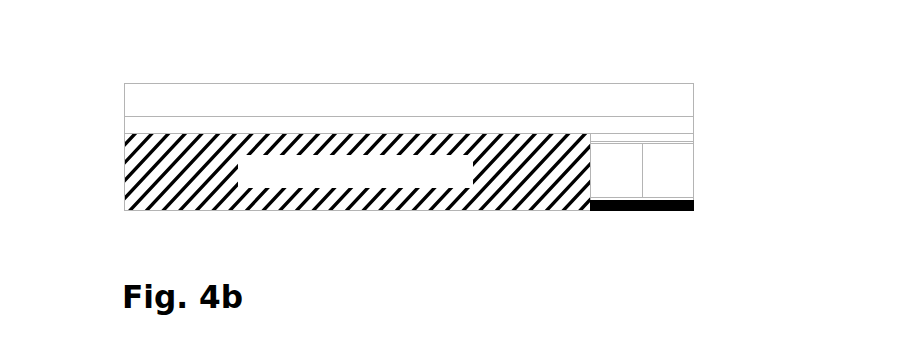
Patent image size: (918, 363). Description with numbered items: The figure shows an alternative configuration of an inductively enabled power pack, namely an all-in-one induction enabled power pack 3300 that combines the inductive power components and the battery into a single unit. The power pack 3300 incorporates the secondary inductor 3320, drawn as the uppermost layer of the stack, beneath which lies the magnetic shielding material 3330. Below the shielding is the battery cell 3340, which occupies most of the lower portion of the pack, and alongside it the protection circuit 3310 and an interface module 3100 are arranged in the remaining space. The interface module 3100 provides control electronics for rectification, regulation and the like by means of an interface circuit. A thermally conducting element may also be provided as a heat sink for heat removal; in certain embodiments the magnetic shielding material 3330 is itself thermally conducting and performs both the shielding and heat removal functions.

The induction enabled power pack 3300 is at (123, 145).
The secondary inductor 3320 is at (687, 103).
The magnetic shielding material 3330 is at (682, 123).
The battery cell 3340 is at (372, 194).
The protection circuit 3310 is at (612, 188).
The interface module 3100 is at (658, 188).